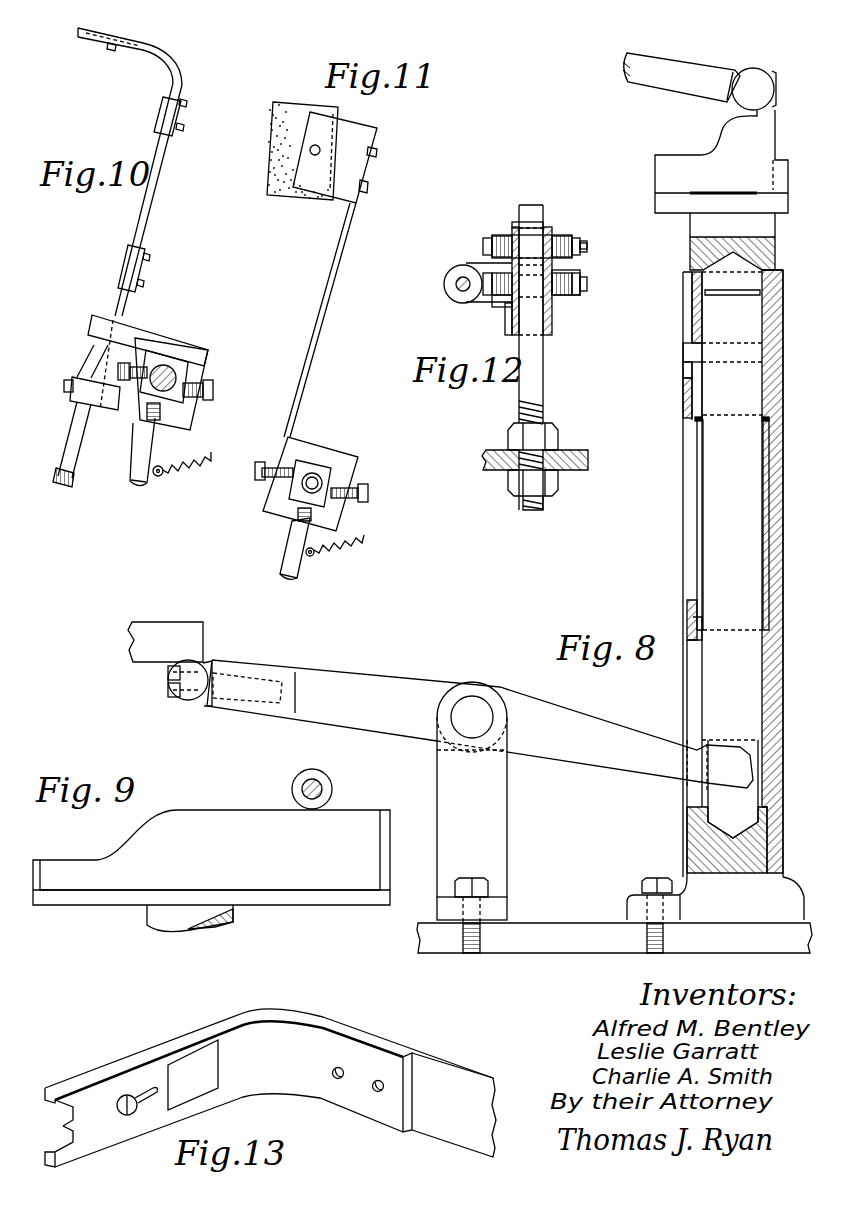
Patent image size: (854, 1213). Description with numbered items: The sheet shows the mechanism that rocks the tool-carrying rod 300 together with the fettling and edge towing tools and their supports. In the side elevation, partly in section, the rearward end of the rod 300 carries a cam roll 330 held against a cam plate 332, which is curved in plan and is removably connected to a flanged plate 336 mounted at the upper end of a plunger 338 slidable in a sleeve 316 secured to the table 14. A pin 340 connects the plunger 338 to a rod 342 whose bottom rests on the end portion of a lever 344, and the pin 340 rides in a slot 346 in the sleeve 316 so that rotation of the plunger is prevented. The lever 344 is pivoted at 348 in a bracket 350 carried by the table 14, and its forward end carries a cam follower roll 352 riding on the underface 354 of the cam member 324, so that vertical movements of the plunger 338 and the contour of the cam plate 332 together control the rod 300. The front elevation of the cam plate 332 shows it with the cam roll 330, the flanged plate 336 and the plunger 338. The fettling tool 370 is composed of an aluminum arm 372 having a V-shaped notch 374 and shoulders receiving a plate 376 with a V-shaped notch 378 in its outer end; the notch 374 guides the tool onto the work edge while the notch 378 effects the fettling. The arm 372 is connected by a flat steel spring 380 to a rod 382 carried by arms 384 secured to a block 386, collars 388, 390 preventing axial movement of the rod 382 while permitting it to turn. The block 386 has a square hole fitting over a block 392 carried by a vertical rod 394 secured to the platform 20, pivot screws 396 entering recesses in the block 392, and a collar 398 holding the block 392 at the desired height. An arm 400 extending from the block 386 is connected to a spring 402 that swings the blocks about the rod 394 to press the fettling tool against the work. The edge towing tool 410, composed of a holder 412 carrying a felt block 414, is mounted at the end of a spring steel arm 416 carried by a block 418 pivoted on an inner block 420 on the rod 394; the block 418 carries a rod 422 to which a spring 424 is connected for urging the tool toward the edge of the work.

In FIG. 8, the table 14 is at (595, 947).
In FIG. 12, the platform 20 is at (567, 450).
In FIG. 8, the rod 300 is at (677, 67).
In FIG. 9, the rod 300 is at (302, 777).
In FIG. 8, the sleeve 316 is at (775, 523).
In FIG. 8, the cam member 324 is at (167, 628).
In FIG. 8, the cam roll 330 is at (757, 73).
In FIG. 9, the cam roll 330 is at (330, 777).
In FIG. 8, the cam plate 332 is at (770, 123).
In FIG. 9, the cam plate 332 is at (217, 818).
In FIG. 8, the flanged plate 336 is at (787, 190).
In FIG. 9, the flanged plate 336 is at (320, 897).
In FIG. 8, the plunger 338 is at (690, 247).
In FIG. 9, the plunger 338 is at (233, 922).
In FIG. 8, the pin 340 is at (685, 350).
In FIG. 8, the rod 342 is at (760, 510).
In FIG. 8, the lever 344 is at (585, 728).
In FIG. 8, the slot 346 is at (685, 313).
In FIG. 8, the pivot 348 is at (473, 707).
In FIG. 8, the bracket 350 is at (497, 843).
In FIG. 8, the cam follower roll 352 is at (205, 663).
In FIG. 8, the underface 354 is at (155, 662).
In FIG. 10, the fettling tool 370 is at (136, 31).
In FIG. 10, the arm 372 is at (147, 42).
In FIG. 13, the arm 372 is at (177, 1032).
In FIG. 13, the V-shaped notch 374 is at (47, 1117).
In FIG. 13, the plate 376 is at (117, 1085).
In FIG. 13, the V-shaped notch 378 is at (60, 1135).
In FIG. 10, the flat steel spring 380 is at (157, 190).
In FIG. 13, the flat steel spring 380 is at (457, 1063).
In FIG. 10, the rod 382 is at (75, 427).
In FIG. 12, the rod 382 is at (457, 287).
In FIG. 10, the arms 384 is at (150, 318).
In FIG. 12, the arms 384 is at (473, 265).
In FIG. 10, the block 386 is at (170, 347).
In FIG. 12, the block 386 is at (503, 305).
In FIG. 10, the collar 388 is at (97, 332).
In FIG. 10, the collar 390 is at (80, 373).
In FIG. 10, the block 392 is at (185, 370).
In FIG. 12, the block 392 is at (567, 265).
In FIG. 10, the vertical rod 394 is at (167, 373).
In FIG. 11, the vertical rod 394 is at (308, 487).
In FIG. 12, the vertical rod 394 is at (537, 383).
In FIG. 10, the pivot screws 396 is at (217, 390).
In FIG. 12, the pivot screws 396 is at (588, 291).
In FIG. 12, the collar 398 is at (550, 340).
In FIG. 10, the arm 400 is at (134, 478).
In FIG. 10, the spring 402 is at (182, 468).
In FIG. 11, the edge towing tool 410 is at (398, 123).
In FIG. 11, the holder 412 is at (357, 118).
In FIG. 11, the felt block 414 is at (292, 102).
In FIG. 11, the spring steel arm 416 is at (303, 387).
In FIG. 11, the block 418 is at (317, 450).
In FIG. 12, the block 418 is at (550, 230).
In FIG. 11, the inner block 420 is at (327, 477).
In FIG. 12, the inner block 420 is at (545, 228).
In FIG. 11, the rod 422 is at (292, 560).
In FIG. 11, the spring 424 is at (345, 540).